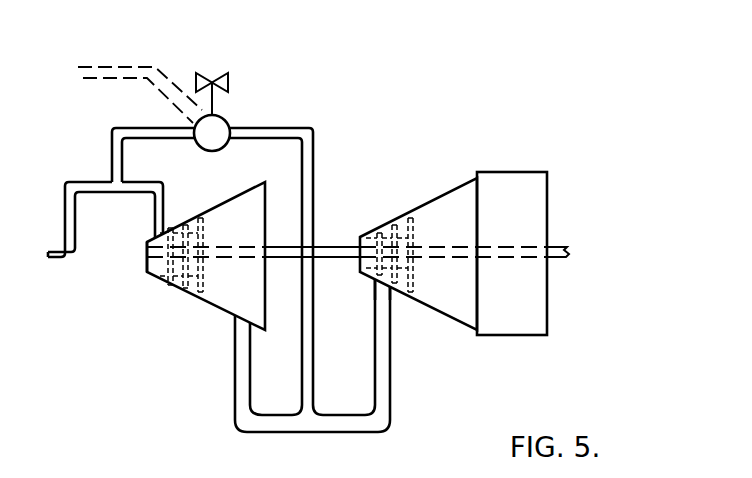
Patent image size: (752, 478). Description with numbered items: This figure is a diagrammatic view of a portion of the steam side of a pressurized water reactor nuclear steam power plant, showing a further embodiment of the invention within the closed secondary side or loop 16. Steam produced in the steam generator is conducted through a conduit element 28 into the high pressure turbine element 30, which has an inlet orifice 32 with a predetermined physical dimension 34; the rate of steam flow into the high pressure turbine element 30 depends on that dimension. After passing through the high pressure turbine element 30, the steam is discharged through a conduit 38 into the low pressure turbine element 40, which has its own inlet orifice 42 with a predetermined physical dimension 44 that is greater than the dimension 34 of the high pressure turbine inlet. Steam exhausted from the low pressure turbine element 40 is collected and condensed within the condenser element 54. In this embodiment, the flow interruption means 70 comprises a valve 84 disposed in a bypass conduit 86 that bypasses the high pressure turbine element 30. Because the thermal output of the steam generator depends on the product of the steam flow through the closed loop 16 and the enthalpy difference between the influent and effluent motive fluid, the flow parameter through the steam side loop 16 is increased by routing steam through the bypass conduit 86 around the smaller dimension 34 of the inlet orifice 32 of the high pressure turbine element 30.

The closed secondary side or loop 16 is at (92, 403).
The conduit element 28 is at (60, 262).
The high pressure turbine element 30 is at (215, 297).
The inlet orifice 32 is at (168, 213).
The predetermined physical dimension 34 is at (147, 243).
The conduit 38 is at (360, 425).
The low pressure turbine element 40 is at (457, 190).
The inlet orifice 42 is at (370, 289).
The predetermined physical dimension 44 is at (387, 290).
The condenser element 54 is at (540, 193).
The flow interruption means 70 is at (338, 110).
The valve 84 is at (222, 120).
The bypass conduit 86 is at (302, 271).